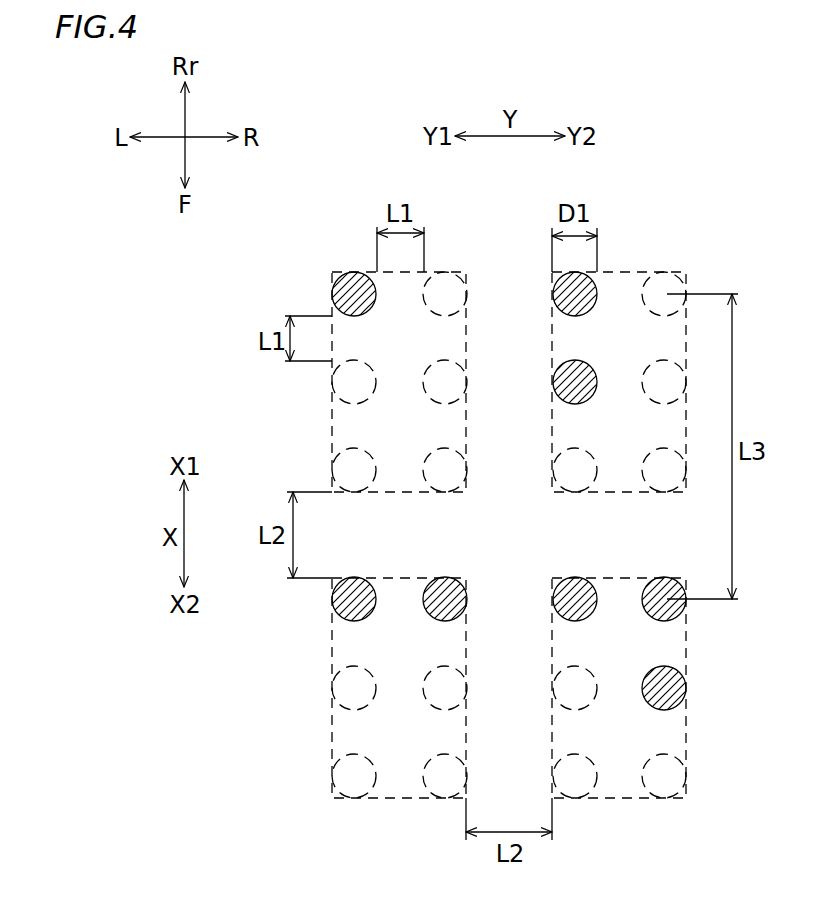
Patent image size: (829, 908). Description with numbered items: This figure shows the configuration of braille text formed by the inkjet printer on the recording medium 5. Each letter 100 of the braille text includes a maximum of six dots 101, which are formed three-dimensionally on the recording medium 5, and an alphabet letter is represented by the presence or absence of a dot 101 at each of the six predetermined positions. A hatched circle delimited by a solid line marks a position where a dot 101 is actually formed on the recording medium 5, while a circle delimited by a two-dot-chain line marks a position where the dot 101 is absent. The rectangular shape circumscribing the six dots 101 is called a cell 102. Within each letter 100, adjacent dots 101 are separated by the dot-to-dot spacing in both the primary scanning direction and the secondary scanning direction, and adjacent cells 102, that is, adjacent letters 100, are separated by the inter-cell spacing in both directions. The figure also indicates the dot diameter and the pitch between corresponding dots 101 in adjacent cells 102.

The recording medium 5 is at (697, 192).
The letter 100 is at (453, 250).
The dot 101 is at (354, 278).
The cell 102 is at (330, 418).